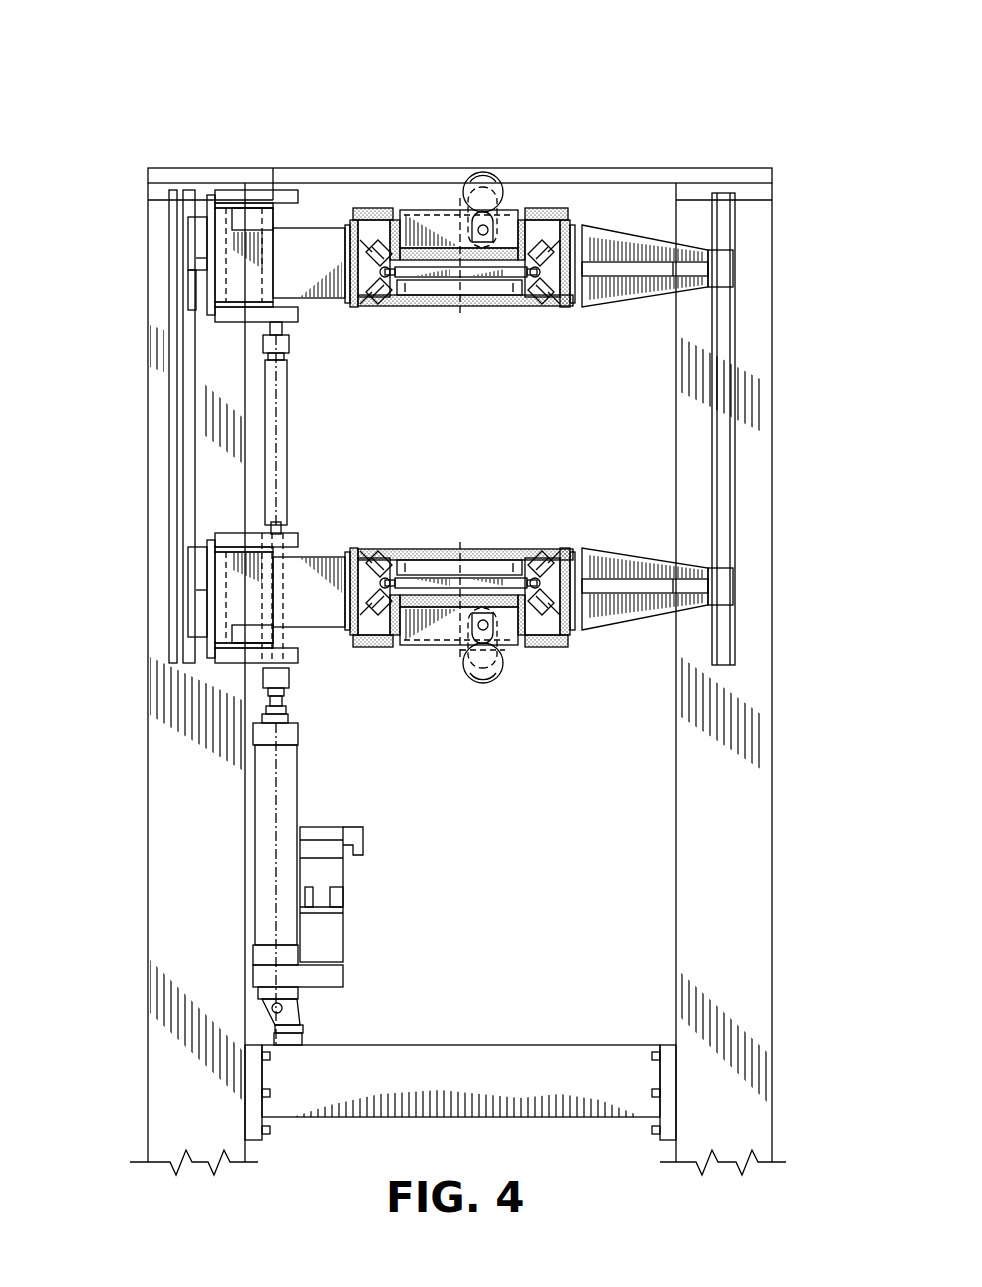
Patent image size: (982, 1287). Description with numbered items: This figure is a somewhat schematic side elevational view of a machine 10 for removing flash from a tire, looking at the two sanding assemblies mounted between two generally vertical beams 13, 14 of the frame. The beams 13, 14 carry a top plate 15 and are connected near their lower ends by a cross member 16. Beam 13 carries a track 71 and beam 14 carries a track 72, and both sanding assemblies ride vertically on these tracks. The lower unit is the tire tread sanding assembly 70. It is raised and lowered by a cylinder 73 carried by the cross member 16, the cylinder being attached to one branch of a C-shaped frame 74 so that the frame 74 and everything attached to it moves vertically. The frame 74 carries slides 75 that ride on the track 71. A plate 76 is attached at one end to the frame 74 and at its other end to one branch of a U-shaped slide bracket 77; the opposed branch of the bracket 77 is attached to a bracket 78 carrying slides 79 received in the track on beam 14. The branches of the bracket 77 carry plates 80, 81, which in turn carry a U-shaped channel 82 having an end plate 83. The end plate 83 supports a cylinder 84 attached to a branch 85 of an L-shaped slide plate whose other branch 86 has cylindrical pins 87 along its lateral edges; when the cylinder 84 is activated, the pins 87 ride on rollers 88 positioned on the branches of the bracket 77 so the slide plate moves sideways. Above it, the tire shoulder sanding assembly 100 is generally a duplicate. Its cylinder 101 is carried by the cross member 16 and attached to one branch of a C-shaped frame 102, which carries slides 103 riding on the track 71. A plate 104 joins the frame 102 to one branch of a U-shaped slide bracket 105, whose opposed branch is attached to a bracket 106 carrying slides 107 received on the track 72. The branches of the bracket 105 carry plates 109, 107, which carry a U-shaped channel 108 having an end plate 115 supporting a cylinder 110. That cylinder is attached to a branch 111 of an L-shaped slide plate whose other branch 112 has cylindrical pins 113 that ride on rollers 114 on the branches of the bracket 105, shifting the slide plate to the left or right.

The machine for removing flash from a tire 10 is at (160, 98).
The vertical beam 13 is at (175, 915).
The vertical beam 14 is at (745, 915).
The top plate 15 is at (748, 180).
The cross member 16 is at (495, 1075).
The tire tread sanding assembly 70 is at (640, 535).
The track 71 is at (190, 400).
The track 72 is at (725, 455).
The cylinder 73 is at (285, 805).
The C-shaped frame 74 is at (235, 540).
The slides 75 is at (196, 565).
The plate 76 is at (250, 585).
The U-shaped slide bracket 77 is at (430, 553).
The bracket 78 is at (620, 590).
The slides 79 is at (725, 590).
The plate 80 is at (375, 640).
The plate 81 is at (545, 640).
The U-shaped channel 82 is at (450, 600).
The end plate 83 is at (425, 628).
The cylinder 84 is at (483, 660).
The branch of slide plate 85 is at (505, 640).
The branch of slide plate 86 is at (470, 583).
The cylindrical pins 87 is at (387, 578).
The rollers 88 is at (380, 600).
The tire shoulder sanding assembly 100 is at (640, 322).
The cylinder 101 is at (280, 425).
The C-shaped frame 102 is at (268, 228).
The slides 103 is at (196, 242).
The plate 104 is at (250, 270).
The U-shaped slide bracket 105 is at (356, 240).
The bracket 106 is at (660, 270).
The slides 107 is at (545, 218).
The U-shaped channel 108 is at (450, 255).
The plate 109 is at (372, 215).
The cylinder 110 is at (483, 195).
The branch of slide plate 111 is at (505, 210).
The branch of slide plate 112 is at (470, 278).
The cylindrical pins 113 is at (387, 280).
The rollers 114 is at (375, 272).
The end plate 115 is at (420, 250).